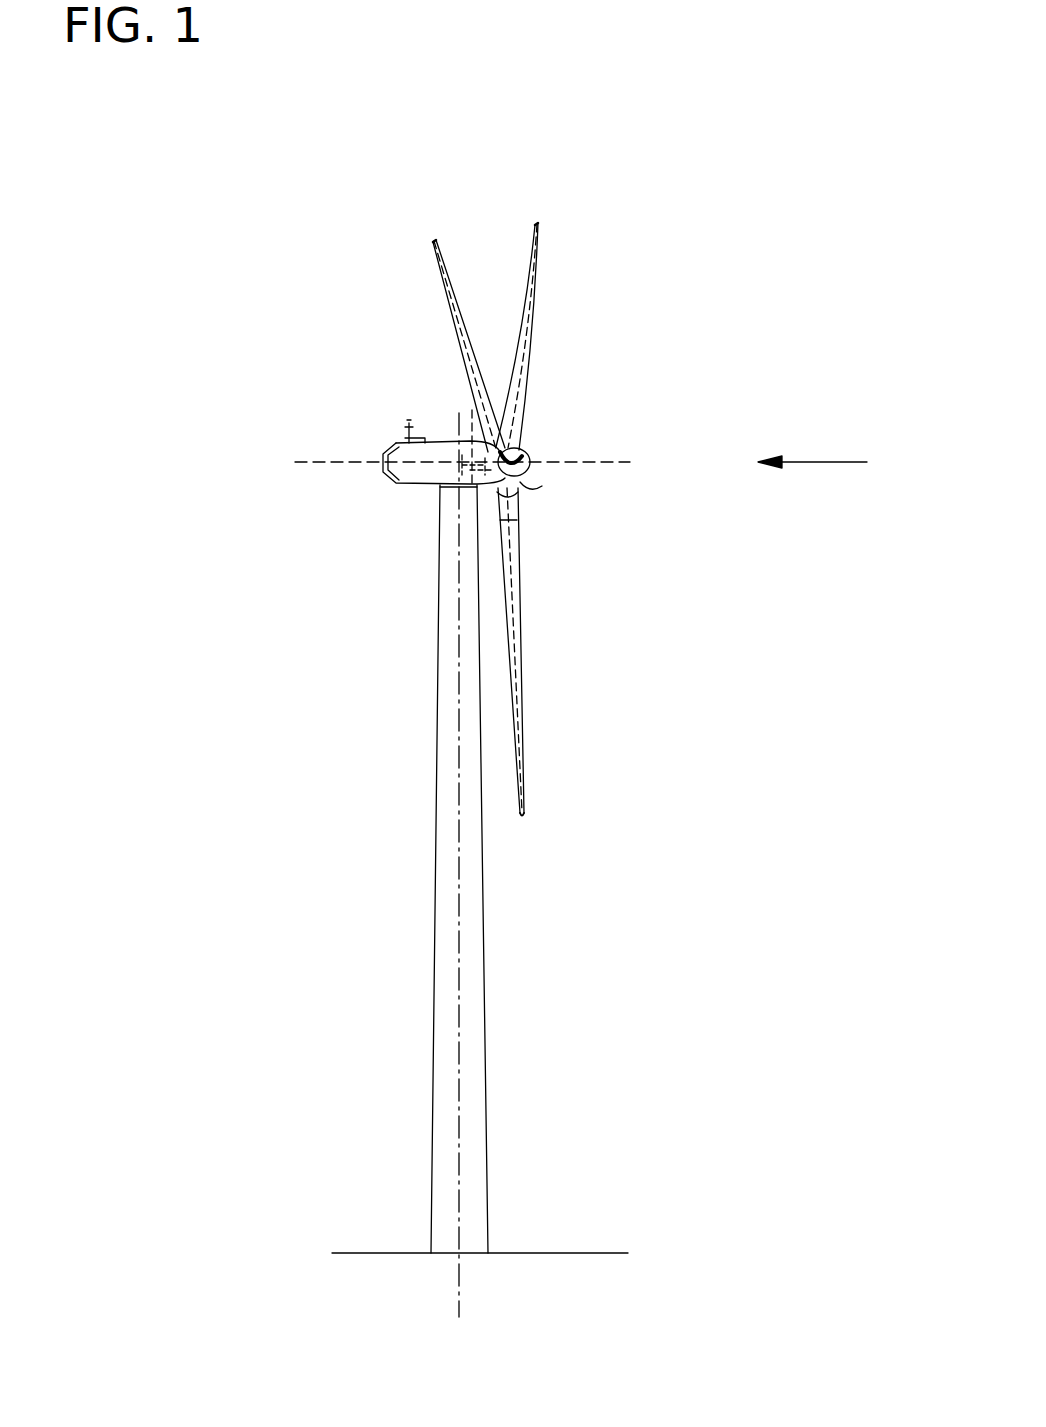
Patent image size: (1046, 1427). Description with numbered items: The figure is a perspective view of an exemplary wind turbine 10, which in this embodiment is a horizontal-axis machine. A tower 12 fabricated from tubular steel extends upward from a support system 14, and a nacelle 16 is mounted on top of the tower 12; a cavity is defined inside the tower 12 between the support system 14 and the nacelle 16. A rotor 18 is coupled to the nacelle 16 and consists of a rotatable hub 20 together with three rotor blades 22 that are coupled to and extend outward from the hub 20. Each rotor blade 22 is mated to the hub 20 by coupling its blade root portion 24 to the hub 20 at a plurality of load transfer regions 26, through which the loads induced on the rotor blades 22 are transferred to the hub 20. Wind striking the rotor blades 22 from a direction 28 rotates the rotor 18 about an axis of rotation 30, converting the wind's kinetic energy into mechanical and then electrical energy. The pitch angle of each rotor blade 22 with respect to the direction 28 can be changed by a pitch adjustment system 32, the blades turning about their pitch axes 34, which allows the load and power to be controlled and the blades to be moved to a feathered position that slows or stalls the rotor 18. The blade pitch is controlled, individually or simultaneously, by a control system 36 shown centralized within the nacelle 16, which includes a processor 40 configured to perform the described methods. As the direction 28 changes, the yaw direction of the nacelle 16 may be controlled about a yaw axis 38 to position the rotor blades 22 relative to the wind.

The wind turbine 10 is at (218, 248).
The tower 12 is at (433, 1025).
The support system 14 is at (388, 1253).
The nacelle 16 is at (406, 485).
The rotor 18 is at (545, 362).
The rotatable hub 20 is at (528, 456).
The rotor blade 22 is at (455, 310).
The blade root portion 24 is at (510, 570).
The load transfer region 26 is at (512, 482).
The direction 28 is at (832, 462).
The axis of rotation 30 is at (594, 462).
The pitch adjustment system 32 is at (520, 520).
The pitch axis 34 is at (430, 246).
The control system 36 is at (458, 505).
The yaw axis 38 is at (460, 912).
The processor 40 is at (472, 410).